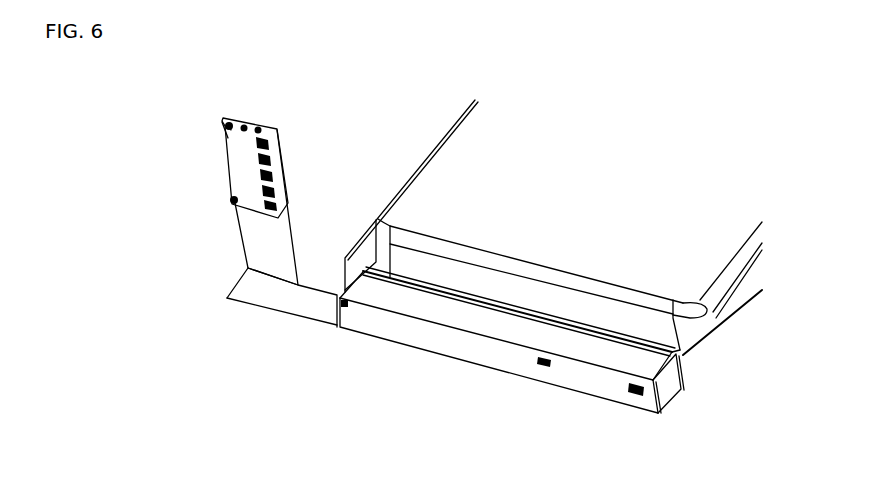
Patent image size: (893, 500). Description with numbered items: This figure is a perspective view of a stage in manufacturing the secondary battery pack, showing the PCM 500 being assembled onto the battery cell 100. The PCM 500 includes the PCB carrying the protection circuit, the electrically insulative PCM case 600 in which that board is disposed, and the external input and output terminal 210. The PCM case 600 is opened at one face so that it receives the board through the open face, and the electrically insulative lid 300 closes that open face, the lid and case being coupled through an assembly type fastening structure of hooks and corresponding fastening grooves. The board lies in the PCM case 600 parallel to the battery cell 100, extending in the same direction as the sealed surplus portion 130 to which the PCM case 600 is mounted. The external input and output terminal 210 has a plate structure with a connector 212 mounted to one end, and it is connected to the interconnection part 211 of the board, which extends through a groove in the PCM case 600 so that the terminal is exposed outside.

The battery cell 100 is at (520, 136).
The sealed surplus portion 130 is at (597, 327).
The electrically insulative lid 300 is at (486, 325).
The PCM 500 is at (699, 399).
The PCM case 600 is at (483, 352).
The external input and output terminal 210 is at (130, 137).
The interconnection part 211 is at (245, 277).
The connector 212 is at (245, 168).